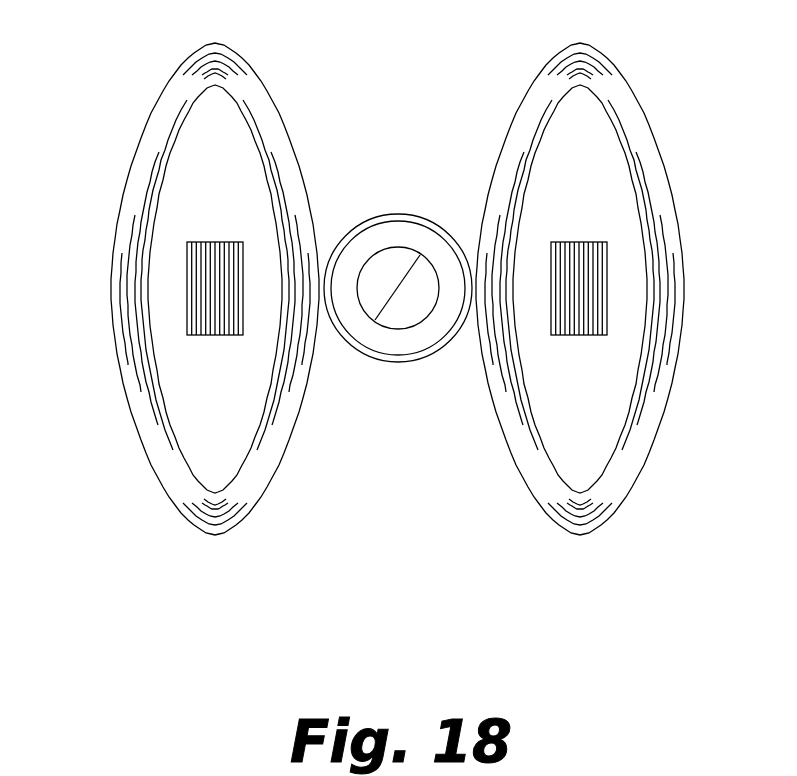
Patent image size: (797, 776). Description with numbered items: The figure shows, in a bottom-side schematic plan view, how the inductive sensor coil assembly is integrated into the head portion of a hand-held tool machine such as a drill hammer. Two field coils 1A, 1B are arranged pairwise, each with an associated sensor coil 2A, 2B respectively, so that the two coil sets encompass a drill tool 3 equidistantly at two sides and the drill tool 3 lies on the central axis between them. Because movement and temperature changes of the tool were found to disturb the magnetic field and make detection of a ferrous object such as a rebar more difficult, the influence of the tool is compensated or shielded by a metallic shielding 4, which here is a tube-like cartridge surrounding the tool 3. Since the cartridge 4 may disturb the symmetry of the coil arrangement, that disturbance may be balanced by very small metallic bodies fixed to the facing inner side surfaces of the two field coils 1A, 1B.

The field coil 1A is at (135, 163).
The field coil 1B is at (650, 160).
The sensor coil 2A is at (200, 307).
The sensor coil 2B is at (597, 308).
The drill tool 3 is at (402, 310).
The metallic shielding 4 is at (395, 213).